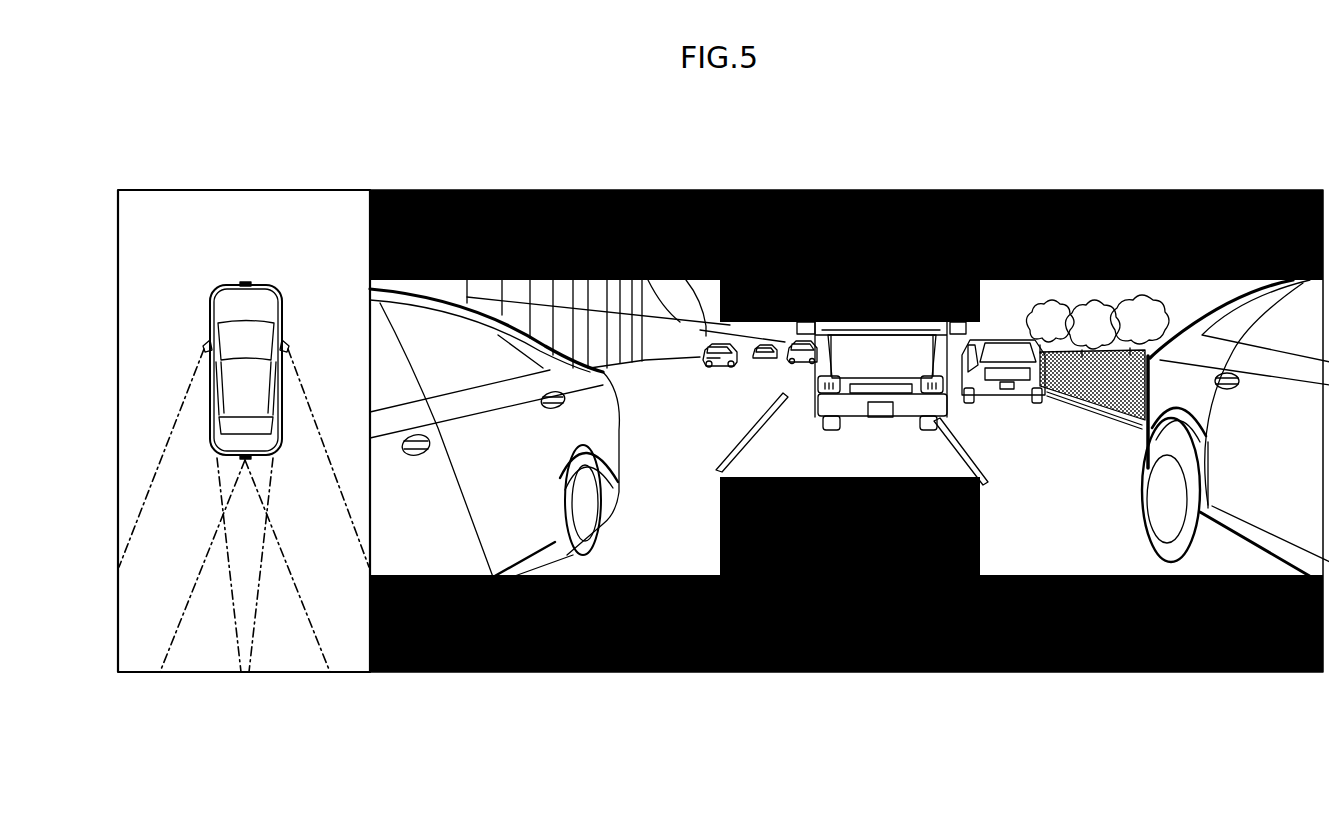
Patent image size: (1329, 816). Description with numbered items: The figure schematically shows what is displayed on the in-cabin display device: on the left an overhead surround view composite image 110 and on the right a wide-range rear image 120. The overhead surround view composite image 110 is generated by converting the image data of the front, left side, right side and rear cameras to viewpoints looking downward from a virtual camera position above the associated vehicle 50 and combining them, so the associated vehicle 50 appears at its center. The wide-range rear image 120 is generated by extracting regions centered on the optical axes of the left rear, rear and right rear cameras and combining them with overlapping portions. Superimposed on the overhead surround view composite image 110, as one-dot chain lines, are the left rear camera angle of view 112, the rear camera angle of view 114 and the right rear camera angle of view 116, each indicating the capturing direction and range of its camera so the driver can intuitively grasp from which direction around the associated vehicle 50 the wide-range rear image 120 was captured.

The overhead surround view composite image 110 is at (205, 190).
The wide-range rear image 120 is at (1075, 190).
The associated vehicle 50 is at (258, 284).
The left rear camera angle of view 112 is at (142, 637).
The rear camera angle of view 114 is at (207, 650).
The right rear camera angle of view 116 is at (350, 637).